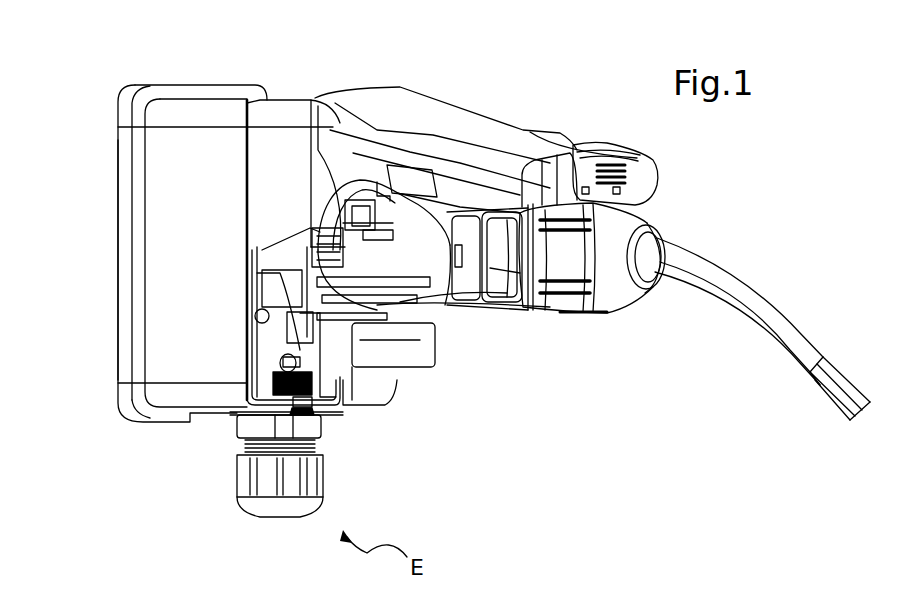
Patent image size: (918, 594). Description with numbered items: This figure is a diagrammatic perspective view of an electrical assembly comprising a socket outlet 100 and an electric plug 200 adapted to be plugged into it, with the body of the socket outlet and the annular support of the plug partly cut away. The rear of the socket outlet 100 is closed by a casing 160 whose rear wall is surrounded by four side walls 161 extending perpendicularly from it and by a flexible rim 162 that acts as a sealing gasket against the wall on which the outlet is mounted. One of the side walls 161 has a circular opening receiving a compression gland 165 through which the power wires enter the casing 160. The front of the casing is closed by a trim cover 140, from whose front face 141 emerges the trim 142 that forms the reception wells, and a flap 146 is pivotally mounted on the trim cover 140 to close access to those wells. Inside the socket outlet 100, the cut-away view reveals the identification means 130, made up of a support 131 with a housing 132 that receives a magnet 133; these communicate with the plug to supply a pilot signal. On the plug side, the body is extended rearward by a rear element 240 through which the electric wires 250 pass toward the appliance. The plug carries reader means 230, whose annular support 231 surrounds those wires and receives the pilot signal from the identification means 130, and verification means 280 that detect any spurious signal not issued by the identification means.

The socket outlet 100 is at (218, 77).
The identification means 130 is at (304, 352).
The support 131 is at (257, 273).
The housing 132 is at (262, 327).
The magnet 133 is at (255, 317).
The trim cover 140 is at (300, 100).
The front face 141 is at (387, 345).
The trim 142 is at (342, 200).
The flap 146 is at (402, 96).
The casing 160 is at (162, 397).
The side walls 161 is at (160, 148).
The flexible rim 162 is at (137, 233).
The compression gland 165 is at (255, 426).
The electric plug 200 is at (570, 340).
The reader means 230 is at (390, 327).
The annular support 231 is at (445, 172).
The rear element 240 is at (617, 303).
The electric wires 250 is at (737, 287).
The verification means 280 is at (410, 225).